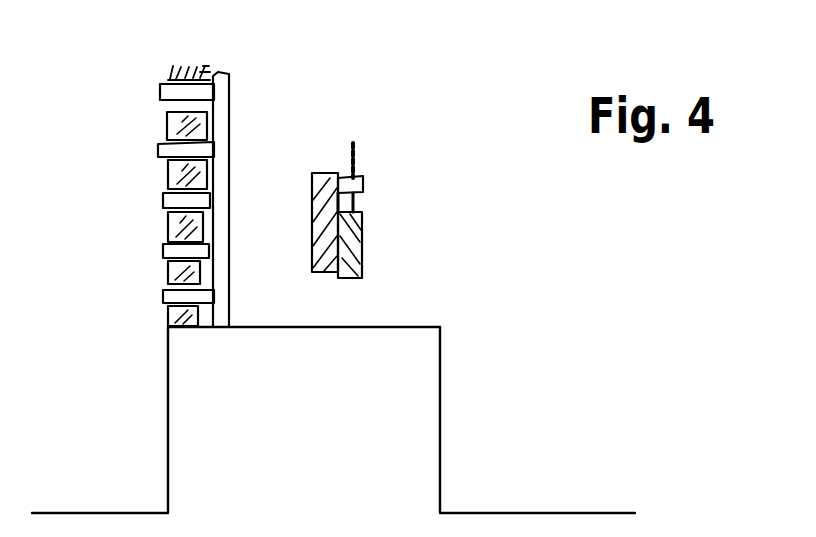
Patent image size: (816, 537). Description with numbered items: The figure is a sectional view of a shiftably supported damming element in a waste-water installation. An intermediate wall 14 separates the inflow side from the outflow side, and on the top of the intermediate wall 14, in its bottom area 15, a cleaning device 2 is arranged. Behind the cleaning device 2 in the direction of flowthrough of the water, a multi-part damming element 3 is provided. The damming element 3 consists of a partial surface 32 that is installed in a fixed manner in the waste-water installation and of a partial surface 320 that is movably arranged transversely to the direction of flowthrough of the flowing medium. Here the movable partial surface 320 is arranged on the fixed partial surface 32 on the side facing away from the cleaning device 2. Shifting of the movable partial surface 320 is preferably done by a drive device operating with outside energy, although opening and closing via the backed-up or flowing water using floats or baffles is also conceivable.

The cleaning device 2 is at (142, 82).
The damming element 3 is at (402, 120).
The partial surface 32 is at (325, 176).
The movable partial surface 320 is at (353, 248).
The bottom area 15 is at (274, 327).
The intermediate wall 14 is at (418, 408).